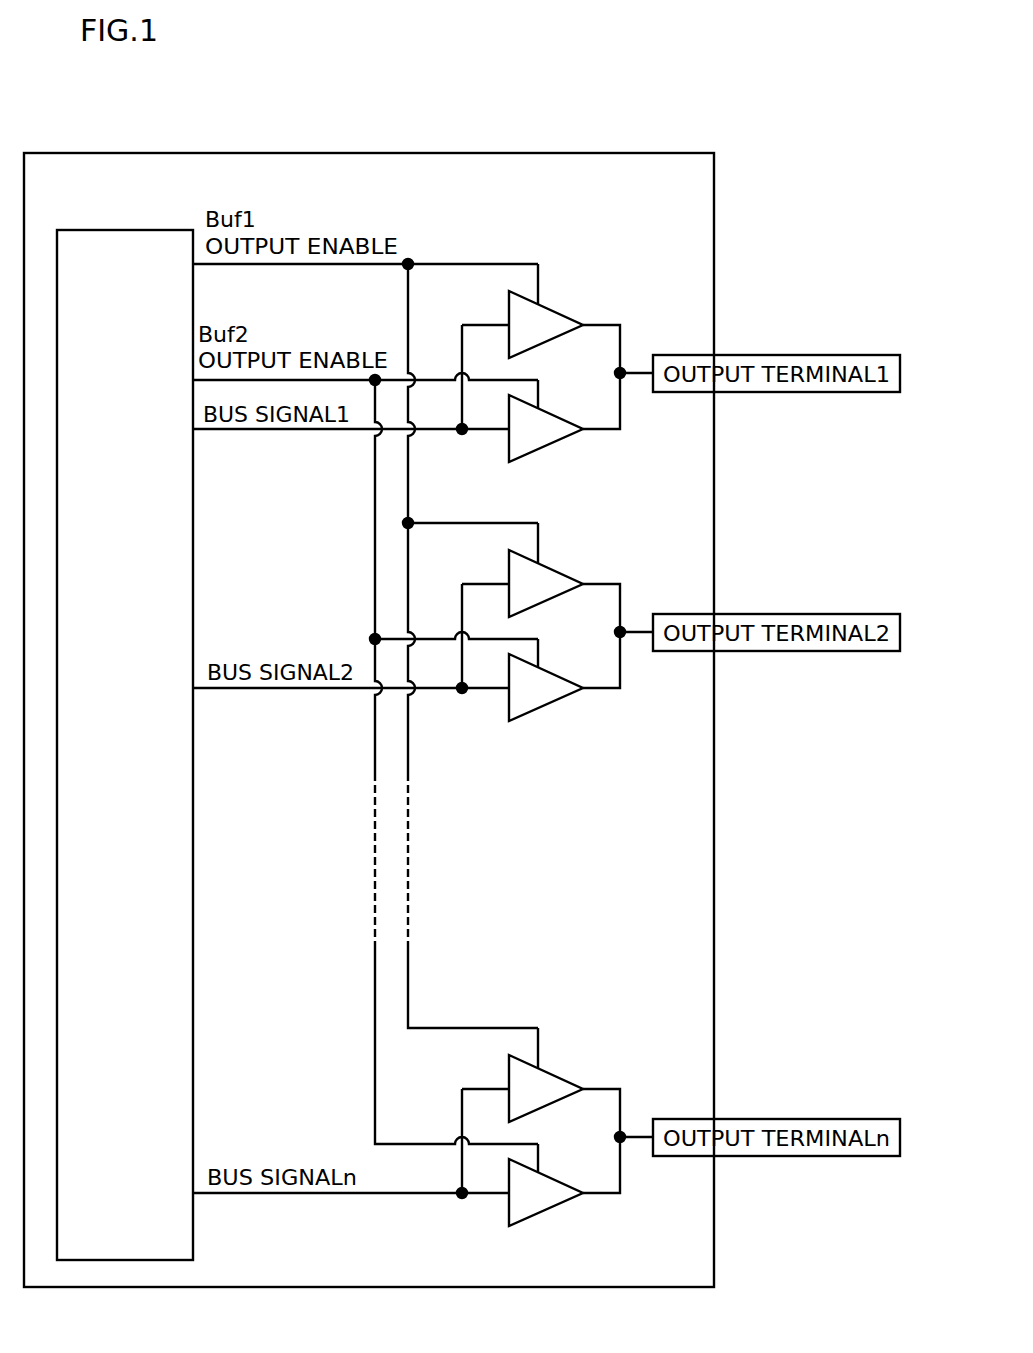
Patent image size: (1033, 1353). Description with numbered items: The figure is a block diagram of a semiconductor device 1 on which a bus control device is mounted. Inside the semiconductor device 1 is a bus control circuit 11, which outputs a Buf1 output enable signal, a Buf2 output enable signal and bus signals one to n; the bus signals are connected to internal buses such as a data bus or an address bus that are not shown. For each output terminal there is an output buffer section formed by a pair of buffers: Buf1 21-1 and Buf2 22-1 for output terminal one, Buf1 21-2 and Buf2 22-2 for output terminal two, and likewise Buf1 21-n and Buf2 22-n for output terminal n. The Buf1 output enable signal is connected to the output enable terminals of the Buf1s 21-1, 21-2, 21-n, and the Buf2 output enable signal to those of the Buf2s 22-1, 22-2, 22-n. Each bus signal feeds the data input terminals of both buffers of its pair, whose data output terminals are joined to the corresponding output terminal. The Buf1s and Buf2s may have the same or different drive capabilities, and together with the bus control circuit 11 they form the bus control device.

The semiconductor device 1 is at (134, 153).
The bus control circuit 11 is at (128, 230).
The buffer 1 (Buf1) 21-1 is at (543, 306).
The buffer 2 (Buf2) 22-1 is at (542, 447).
The buffer 1 (Buf1) 21-2 is at (543, 565).
The buffer 2 (Buf2) 22-2 is at (542, 706).
The buffer 1 (Buf1) 21-n is at (543, 1070).
The buffer 2 (Buf2) 22-n is at (542, 1211).